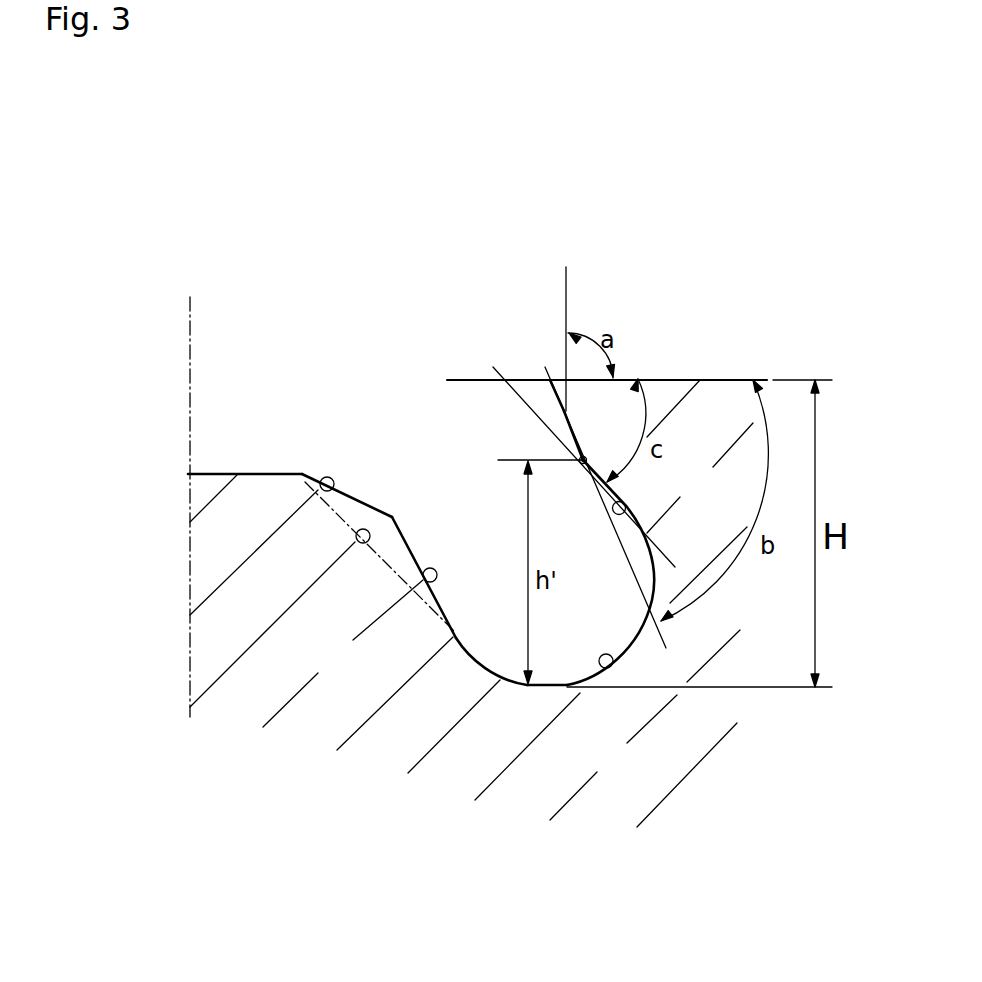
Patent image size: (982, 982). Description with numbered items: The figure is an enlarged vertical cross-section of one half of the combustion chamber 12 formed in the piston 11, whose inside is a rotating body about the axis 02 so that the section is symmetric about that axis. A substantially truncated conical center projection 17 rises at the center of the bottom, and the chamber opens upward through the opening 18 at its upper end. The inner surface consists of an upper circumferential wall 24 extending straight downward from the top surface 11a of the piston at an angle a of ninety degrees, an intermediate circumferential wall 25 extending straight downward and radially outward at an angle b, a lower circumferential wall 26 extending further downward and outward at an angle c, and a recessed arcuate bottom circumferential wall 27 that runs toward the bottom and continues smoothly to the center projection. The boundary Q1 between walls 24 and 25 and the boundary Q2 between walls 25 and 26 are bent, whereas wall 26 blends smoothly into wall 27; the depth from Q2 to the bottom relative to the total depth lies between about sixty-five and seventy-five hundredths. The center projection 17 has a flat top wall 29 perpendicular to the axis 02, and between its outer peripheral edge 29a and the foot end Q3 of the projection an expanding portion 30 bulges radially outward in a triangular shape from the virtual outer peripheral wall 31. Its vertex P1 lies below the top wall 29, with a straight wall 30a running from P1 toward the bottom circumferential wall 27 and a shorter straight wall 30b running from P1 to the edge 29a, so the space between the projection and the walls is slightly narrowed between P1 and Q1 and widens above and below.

The axis 02 is at (192, 303).
The piston 11 is at (727, 380).
The top surface of the piston 11a is at (683, 378).
The combustion chamber 12 is at (410, 367).
The center projection 17 is at (207, 537).
The opening 18 is at (544, 367).
The upper circumferential wall 24 is at (557, 395).
The intermediate circumferential wall 25 is at (560, 427).
The lower circumferential wall 26 is at (628, 508).
The bottom circumferential wall 27 is at (617, 667).
The top wall 29 is at (230, 473).
The outer peripheral edge 29a is at (303, 473).
The expanding portion 30 is at (358, 498).
The wall 30a is at (430, 582).
The wall 30b is at (318, 490).
The outer peripheral wall 31 is at (362, 543).
The vertex P1 is at (392, 516).
The boundary Q1 is at (568, 410).
The boundary Q2 is at (569, 481).
The foot end of the center projection Q3 is at (458, 640).